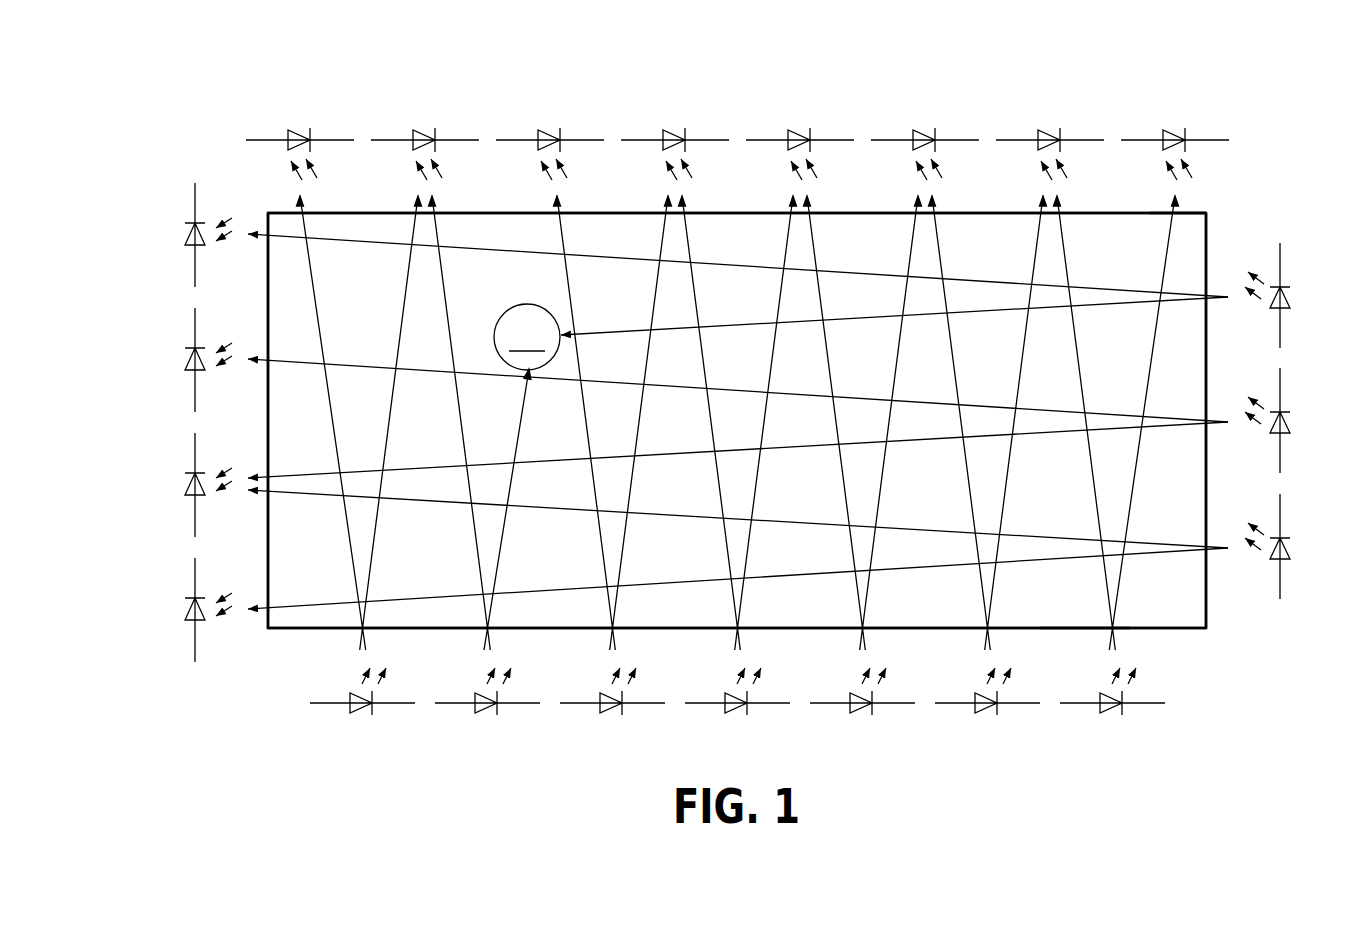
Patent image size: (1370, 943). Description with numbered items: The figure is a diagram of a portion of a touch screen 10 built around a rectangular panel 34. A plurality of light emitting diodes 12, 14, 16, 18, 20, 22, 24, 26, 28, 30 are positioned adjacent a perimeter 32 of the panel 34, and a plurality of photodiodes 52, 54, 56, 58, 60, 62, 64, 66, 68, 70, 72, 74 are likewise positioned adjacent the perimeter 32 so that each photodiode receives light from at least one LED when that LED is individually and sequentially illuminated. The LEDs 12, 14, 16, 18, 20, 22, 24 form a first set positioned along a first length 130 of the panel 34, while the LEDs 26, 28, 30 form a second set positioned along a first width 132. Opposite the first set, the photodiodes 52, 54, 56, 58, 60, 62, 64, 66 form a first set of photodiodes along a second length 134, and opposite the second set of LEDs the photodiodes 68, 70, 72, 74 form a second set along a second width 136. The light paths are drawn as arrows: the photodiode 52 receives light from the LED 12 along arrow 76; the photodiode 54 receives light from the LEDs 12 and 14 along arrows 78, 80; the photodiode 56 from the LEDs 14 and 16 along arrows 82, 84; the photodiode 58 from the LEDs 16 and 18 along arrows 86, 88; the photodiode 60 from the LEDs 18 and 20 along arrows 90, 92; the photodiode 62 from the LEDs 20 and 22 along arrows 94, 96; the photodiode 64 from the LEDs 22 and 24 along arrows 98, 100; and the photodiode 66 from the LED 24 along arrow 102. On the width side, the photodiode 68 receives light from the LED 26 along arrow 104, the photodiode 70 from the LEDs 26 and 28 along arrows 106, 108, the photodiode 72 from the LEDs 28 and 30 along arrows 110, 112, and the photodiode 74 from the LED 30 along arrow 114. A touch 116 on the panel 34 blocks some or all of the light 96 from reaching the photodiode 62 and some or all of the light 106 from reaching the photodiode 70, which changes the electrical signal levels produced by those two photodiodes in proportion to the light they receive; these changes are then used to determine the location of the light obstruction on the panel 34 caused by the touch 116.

The touch screen 10 is at (1225, 90).
The light emitting diode 12 is at (1150, 705).
The light emitting diode 14 is at (1025, 705).
The light emitting diode 16 is at (900, 705).
The light emitting diode 18 is at (775, 705).
The light emitting diode 20 is at (650, 705).
The light emitting diode 22 is at (525, 705).
The light emitting diode 24 is at (400, 705).
The light emitting diode 26 is at (1281, 329).
The light emitting diode 28 is at (1281, 454).
The light emitting diode 30 is at (1281, 580).
The perimeter 32 is at (1078, 630).
The panel 34 is at (1210, 210).
The photodiode 52 is at (1142, 138).
The photodiode 54 is at (1017, 138).
The photodiode 56 is at (892, 138).
The photodiode 58 is at (767, 138).
The photodiode 60 is at (642, 138).
The photodiode 62 is at (517, 138).
The photodiode 64 is at (392, 138).
The photodiode 66 is at (267, 138).
The photodiode 68 is at (195, 266).
The photodiode 70 is at (195, 391).
The photodiode 72 is at (195, 516).
The photodiode 74 is at (195, 641).
The arrow 76 is at (1116, 618).
The arrow 78 is at (1063, 230).
The arrow 80 is at (991, 618).
The arrow 82 is at (938, 230).
The arrow 84 is at (866, 618).
The arrow 86 is at (813, 230).
The arrow 88 is at (741, 618).
The arrow 90 is at (688, 230).
The arrow 92 is at (616, 618).
The arrow 94 is at (563, 232).
The arrow 96 is at (491, 618).
The arrow 98 is at (438, 230).
The arrow 100 is at (366, 618).
The arrow 102 is at (305, 228).
The arrow 104 is at (1185, 292).
The arrow 106 is at (1180, 302).
The arrow 108 is at (1182, 418).
The arrow 110 is at (1173, 427).
The arrow 112 is at (1180, 544).
The arrow 114 is at (1173, 553).
The touch 116 is at (527, 337).
The first length 130 is at (296, 630).
The first width 132 is at (1209, 612).
The second length 134 is at (279, 212).
The second width 136 is at (267, 314).